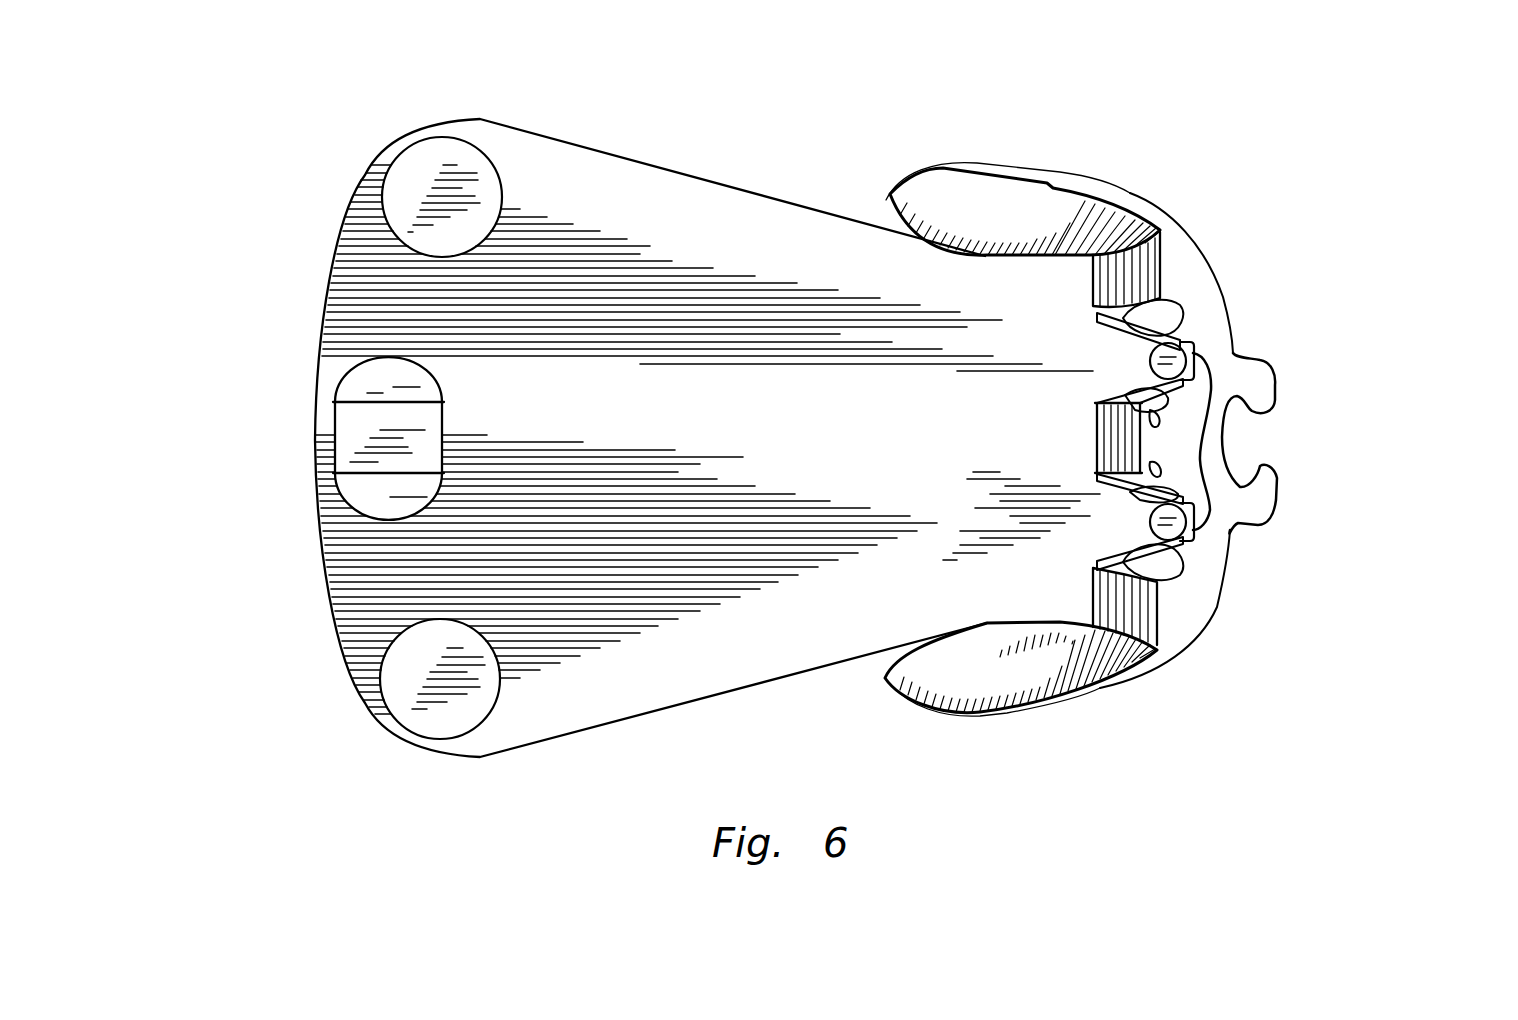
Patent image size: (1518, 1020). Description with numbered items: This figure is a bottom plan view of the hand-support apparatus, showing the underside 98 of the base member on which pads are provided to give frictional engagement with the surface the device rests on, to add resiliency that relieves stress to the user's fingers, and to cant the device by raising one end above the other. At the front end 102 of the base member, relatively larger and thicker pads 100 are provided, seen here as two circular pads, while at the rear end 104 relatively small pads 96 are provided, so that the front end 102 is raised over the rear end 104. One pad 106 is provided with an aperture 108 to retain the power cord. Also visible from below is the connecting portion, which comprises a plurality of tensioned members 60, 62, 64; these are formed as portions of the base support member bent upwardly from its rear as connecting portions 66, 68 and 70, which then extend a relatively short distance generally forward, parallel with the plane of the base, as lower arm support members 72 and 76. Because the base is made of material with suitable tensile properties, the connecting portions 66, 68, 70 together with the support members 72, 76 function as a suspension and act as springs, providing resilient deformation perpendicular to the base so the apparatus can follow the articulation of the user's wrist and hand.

The tensioned member 60 is at (858, 700).
The tensioned member 62 is at (1088, 443).
The tensioned member 64 is at (870, 175).
The connecting portion 66 is at (1158, 622).
The connecting portion 68 is at (1147, 443).
The connecting portion 70 is at (1160, 269).
The lower arm support member 72 is at (940, 680).
The lower arm support member 76 is at (1003, 205).
The small pads 96 is at (1187, 347).
The underside 98 is at (788, 414).
The larger pads 100 is at (403, 180).
The front end 102 is at (323, 372).
The rear end 104 is at (1248, 545).
The pad 106 is at (340, 497).
The aperture 108 is at (400, 426).